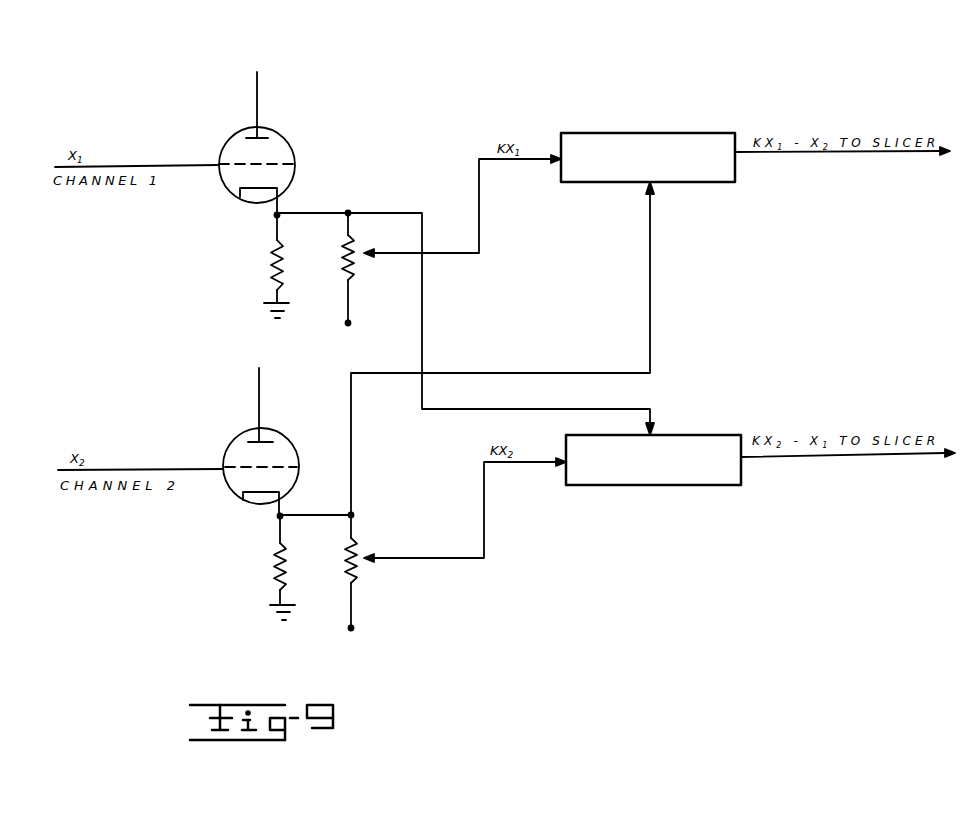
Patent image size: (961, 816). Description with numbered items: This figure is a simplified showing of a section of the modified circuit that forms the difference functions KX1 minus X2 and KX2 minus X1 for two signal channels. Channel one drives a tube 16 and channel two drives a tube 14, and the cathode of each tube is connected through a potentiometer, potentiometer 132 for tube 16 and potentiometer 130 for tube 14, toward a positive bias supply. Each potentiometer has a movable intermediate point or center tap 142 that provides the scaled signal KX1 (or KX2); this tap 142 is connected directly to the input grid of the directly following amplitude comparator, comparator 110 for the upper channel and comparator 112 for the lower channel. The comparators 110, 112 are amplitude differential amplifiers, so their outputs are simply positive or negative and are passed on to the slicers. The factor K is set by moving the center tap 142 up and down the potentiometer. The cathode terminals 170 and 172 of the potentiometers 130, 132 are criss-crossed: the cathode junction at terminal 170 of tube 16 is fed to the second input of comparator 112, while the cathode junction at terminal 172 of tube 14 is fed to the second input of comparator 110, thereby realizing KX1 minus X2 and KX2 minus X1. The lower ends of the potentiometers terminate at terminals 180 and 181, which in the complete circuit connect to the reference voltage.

The tube 16 is at (285, 143).
The tube 14 is at (282, 430).
The amplitude comparator 110 is at (666, 133).
The amplitude comparator 112 is at (647, 486).
The potentiometer 132 is at (343, 258).
The potentiometer 130 is at (347, 560).
The intermediate point (center tap) 142 is at (364, 251).
The potentiometer terminal 170 is at (349, 212).
The potentiometer terminal 172 is at (353, 514).
The potentiometer terminal (channel 1) 180 is at (350, 322).
The potentiometer terminal (channel 2) 181 is at (356, 627).